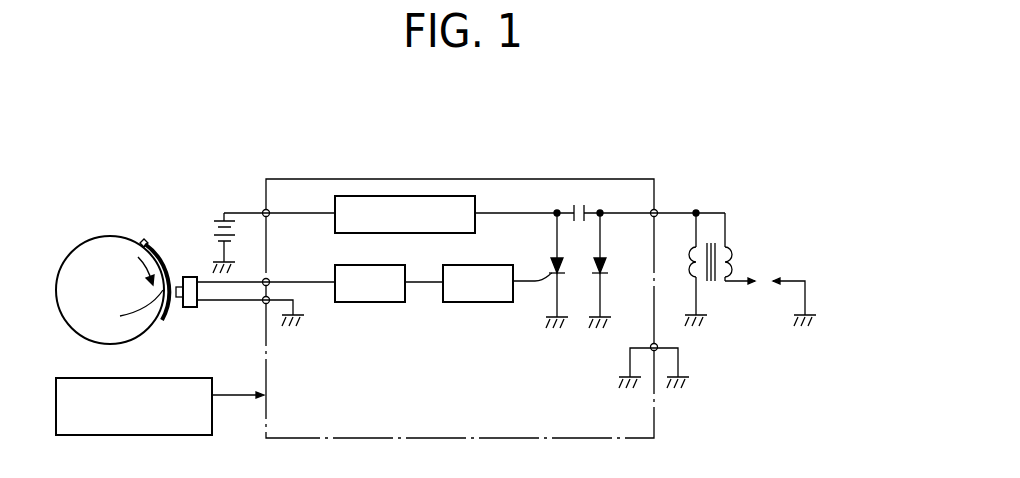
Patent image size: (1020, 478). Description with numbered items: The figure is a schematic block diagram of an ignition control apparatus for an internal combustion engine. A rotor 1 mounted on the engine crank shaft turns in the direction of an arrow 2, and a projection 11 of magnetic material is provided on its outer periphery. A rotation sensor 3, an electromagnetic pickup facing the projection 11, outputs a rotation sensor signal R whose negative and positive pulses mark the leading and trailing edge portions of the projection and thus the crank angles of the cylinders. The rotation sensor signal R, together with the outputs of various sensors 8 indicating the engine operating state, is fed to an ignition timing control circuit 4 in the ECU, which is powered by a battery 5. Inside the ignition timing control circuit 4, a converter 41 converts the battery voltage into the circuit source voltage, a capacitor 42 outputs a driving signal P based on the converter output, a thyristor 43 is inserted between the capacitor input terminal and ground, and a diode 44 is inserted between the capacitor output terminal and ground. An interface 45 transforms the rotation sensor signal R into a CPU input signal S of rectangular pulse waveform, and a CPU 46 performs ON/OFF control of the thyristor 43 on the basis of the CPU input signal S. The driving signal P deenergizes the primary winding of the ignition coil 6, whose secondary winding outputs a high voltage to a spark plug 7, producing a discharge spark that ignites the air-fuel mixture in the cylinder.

The rotor 1 is at (113, 237).
The arrow 2 is at (150, 258).
The rotation sensor 3 is at (193, 308).
The ignition timing control circuit 4 is at (470, 179).
The battery 5 is at (224, 213).
The ignition circuit (ignition coil) 6 is at (725, 213).
The spark plug 7 is at (765, 278).
The various sensors 8 is at (137, 378).
The projection 11 is at (126, 309).
The converter 41 is at (475, 199).
The capacitor 42 is at (590, 208).
The thyristor 43 is at (553, 262).
The diode 44 is at (603, 262).
The interface (I/F) 45 is at (369, 302).
The CPU 46 is at (480, 302).
The driving signal P is at (672, 213).
The rotation sensor signal R is at (282, 282).
The CPU input signal S is at (420, 282).